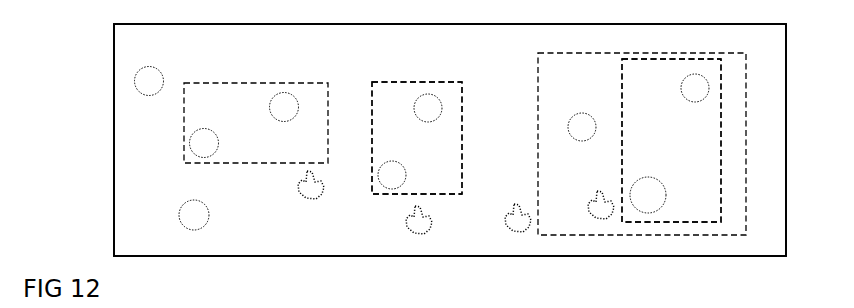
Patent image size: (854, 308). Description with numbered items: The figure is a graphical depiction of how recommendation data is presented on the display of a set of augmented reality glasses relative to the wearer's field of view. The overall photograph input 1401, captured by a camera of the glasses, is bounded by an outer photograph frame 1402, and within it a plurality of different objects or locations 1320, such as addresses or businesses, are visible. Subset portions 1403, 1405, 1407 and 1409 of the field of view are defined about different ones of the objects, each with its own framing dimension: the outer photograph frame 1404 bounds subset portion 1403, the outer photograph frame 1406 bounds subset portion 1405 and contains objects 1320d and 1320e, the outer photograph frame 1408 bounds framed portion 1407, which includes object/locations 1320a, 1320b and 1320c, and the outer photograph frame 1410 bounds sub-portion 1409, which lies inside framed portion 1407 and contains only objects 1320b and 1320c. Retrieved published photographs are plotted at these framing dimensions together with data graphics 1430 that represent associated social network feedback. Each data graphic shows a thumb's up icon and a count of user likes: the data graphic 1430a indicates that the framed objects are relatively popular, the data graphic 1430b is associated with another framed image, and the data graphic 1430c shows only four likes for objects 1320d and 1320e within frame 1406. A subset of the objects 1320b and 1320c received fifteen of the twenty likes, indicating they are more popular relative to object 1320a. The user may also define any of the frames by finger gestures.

The photograph input 1401 is at (135, 140).
The outer photograph frame 1402 is at (114, 93).
The subset portion 1403 is at (257, 101).
The outer photograph frame 1404 is at (232, 83).
The subset portion 1405 is at (394, 100).
The outer photograph frame 1406 is at (385, 82).
The framed portion 1407 is at (560, 168).
The outer photograph frame 1408 is at (590, 52).
The sub-portion 1409 is at (687, 204).
The outer photograph frame 1410 is at (621, 97).
The objects or locations 1320 is at (190, 203).
The object/location 1320a is at (571, 119).
The object/location 1320b is at (640, 181).
The object/location 1320c is at (707, 102).
The object 1320d is at (428, 95).
The object 1320e is at (387, 163).
The data graphics 1430 is at (300, 203).
The data graphic 1430a is at (588, 220).
The data graphic 1430b is at (505, 233).
The data graphic 1430c is at (410, 236).